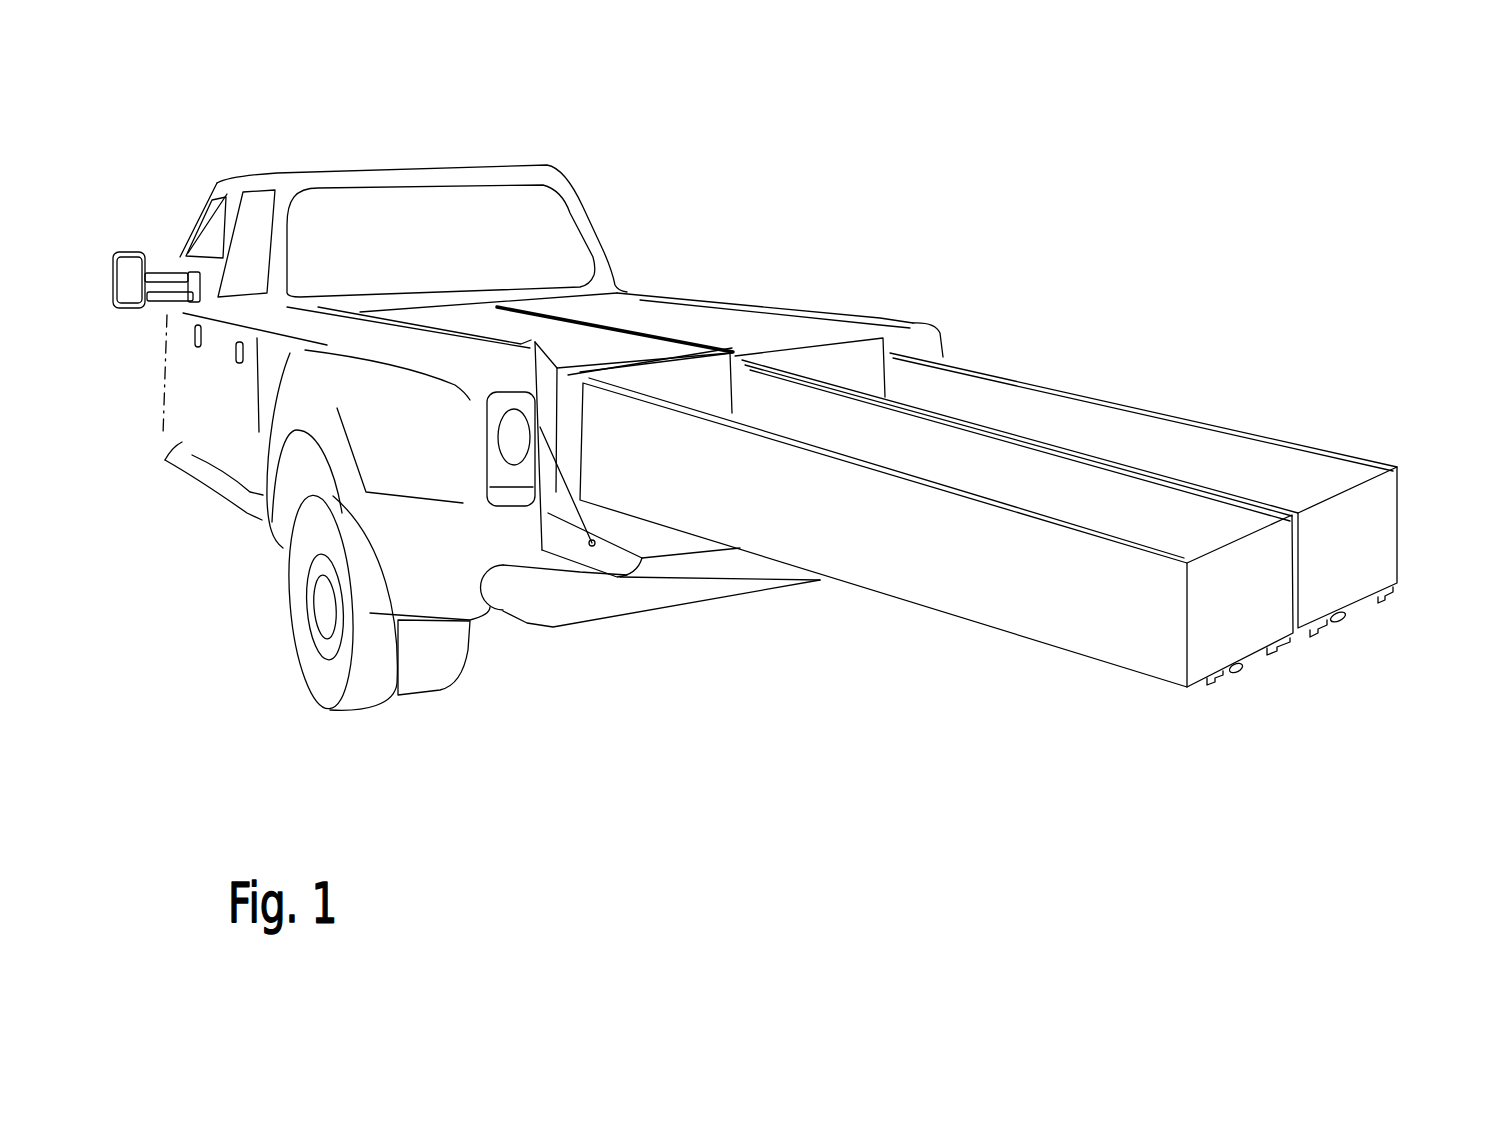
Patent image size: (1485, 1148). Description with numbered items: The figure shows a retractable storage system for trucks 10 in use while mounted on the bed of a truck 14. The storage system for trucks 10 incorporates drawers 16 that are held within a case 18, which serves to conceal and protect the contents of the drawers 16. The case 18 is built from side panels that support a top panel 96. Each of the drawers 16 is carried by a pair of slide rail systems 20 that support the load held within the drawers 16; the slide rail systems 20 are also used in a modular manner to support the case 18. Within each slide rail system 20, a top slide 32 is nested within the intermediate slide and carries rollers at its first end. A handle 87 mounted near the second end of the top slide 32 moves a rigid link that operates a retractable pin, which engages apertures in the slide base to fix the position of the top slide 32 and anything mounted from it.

The retractable storage system for trucks 10 is at (981, 505).
The truck 14 is at (423, 160).
The drawers 16 is at (996, 578).
The case 18 is at (580, 356).
The slide rail systems 20 is at (1287, 647).
The top slide 32 is at (1203, 680).
The handle 87 is at (1247, 673).
The top panel 96 is at (667, 315).